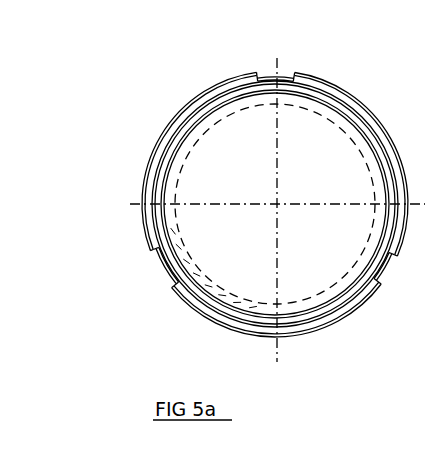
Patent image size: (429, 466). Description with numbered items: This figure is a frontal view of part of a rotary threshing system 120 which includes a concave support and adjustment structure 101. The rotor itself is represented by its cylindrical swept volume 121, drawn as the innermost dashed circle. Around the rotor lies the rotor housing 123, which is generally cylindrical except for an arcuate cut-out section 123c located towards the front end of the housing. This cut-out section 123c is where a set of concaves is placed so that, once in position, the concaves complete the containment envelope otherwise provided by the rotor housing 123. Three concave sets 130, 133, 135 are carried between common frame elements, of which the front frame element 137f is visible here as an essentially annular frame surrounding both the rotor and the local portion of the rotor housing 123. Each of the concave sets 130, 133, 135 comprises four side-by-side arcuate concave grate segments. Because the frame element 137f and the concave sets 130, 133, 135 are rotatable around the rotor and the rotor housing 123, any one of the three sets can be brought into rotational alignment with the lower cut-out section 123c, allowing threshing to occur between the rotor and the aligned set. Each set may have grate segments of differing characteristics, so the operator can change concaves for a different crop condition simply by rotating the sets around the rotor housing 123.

The rotary threshing system 120 is at (120, 67).
The front frame element 137f is at (198, 92).
The third concave set 135 is at (392, 134).
The second concave set 133 is at (150, 153).
The rotor housing 123 is at (162, 180).
The cylindrical swept volume 121 is at (180, 258).
The concave support and adjustment structure 101 is at (96, 330).
The arcuate cut-out section 123c is at (193, 308).
The first concave set 130 is at (235, 328).